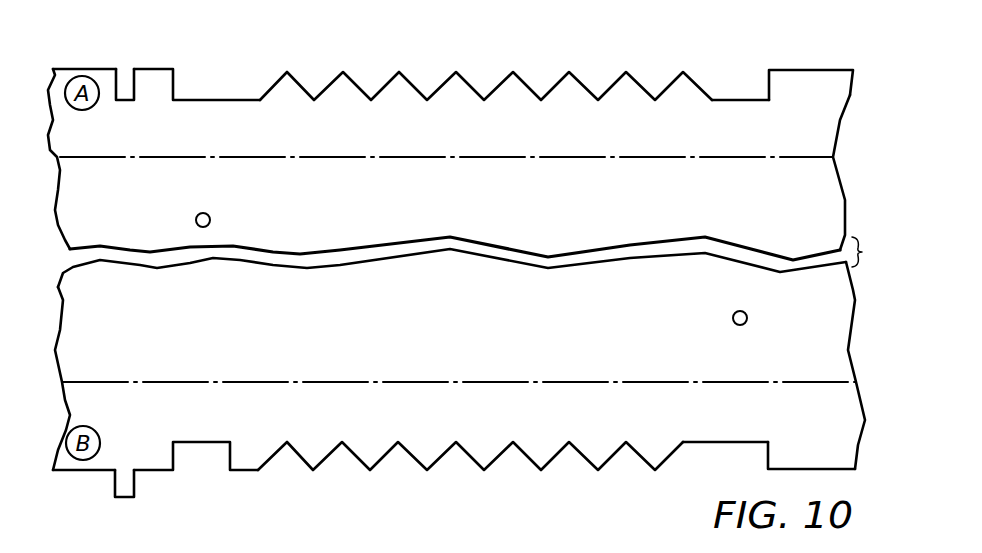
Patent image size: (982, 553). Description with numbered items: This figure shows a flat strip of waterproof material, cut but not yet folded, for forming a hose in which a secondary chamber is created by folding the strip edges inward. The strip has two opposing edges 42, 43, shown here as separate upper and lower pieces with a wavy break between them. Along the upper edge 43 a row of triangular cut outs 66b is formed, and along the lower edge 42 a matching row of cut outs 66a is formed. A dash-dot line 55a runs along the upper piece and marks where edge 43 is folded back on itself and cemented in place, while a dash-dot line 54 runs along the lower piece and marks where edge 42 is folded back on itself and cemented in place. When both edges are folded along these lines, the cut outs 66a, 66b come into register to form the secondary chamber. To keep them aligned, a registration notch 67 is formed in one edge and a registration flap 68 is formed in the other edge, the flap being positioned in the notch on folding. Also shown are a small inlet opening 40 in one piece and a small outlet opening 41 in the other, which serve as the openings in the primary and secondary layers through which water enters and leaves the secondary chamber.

The inlet opening 40 is at (735, 316).
The outlet opening 41 is at (210, 216).
The edge 42 is at (820, 470).
The edge 43 is at (796, 70).
The fold line 54 is at (436, 381).
The fold line 55a is at (569, 158).
The cut outs 66a is at (386, 459).
The cut outs 66b is at (460, 79).
The registration notch 67 is at (118, 67).
The registration flap 68 is at (126, 487).